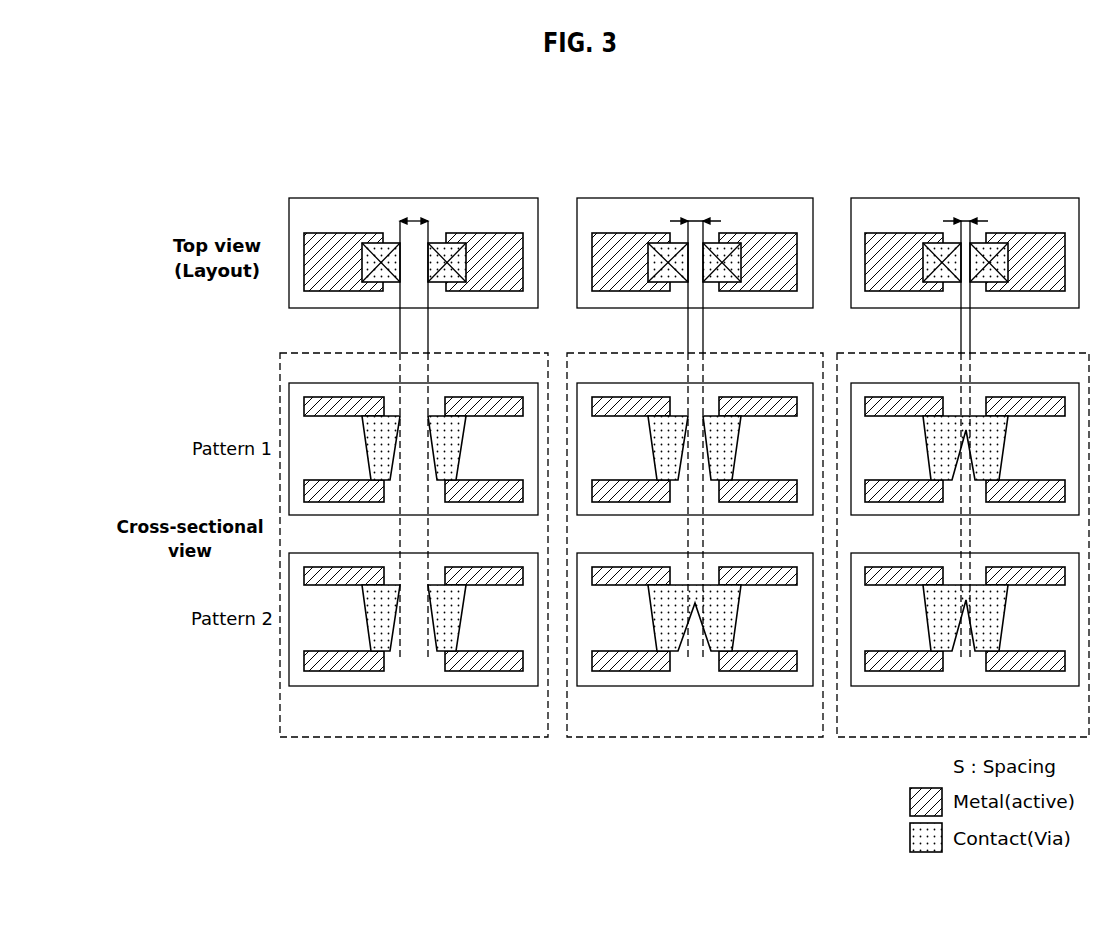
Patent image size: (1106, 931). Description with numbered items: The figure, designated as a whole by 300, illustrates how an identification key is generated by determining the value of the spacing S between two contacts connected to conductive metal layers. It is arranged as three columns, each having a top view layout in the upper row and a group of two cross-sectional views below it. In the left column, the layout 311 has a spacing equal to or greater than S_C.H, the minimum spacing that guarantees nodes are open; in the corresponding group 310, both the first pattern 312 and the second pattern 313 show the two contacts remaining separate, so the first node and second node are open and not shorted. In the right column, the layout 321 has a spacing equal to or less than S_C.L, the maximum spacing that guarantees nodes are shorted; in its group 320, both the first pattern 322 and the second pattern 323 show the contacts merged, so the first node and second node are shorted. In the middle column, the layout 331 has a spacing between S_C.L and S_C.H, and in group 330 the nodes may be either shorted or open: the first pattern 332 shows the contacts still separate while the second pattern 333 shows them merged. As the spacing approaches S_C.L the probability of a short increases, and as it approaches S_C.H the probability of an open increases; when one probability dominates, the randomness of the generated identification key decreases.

The semiconductor device layout and cross-sectional patterns 300 is at (677, 154).
The layout 311 is at (466, 199).
The layout 331 is at (741, 199).
The layout 321 is at (1010, 199).
The group 310 is at (484, 353).
The group 330 is at (758, 353).
The group 320 is at (1025, 353).
The pattern 1 312 is at (466, 384).
The pattern 2 313 is at (466, 554).
The pattern 1 332 is at (741, 384).
The pattern 2 333 is at (741, 554).
The pattern 1 322 is at (1010, 384).
The pattern 2 323 is at (1010, 554).